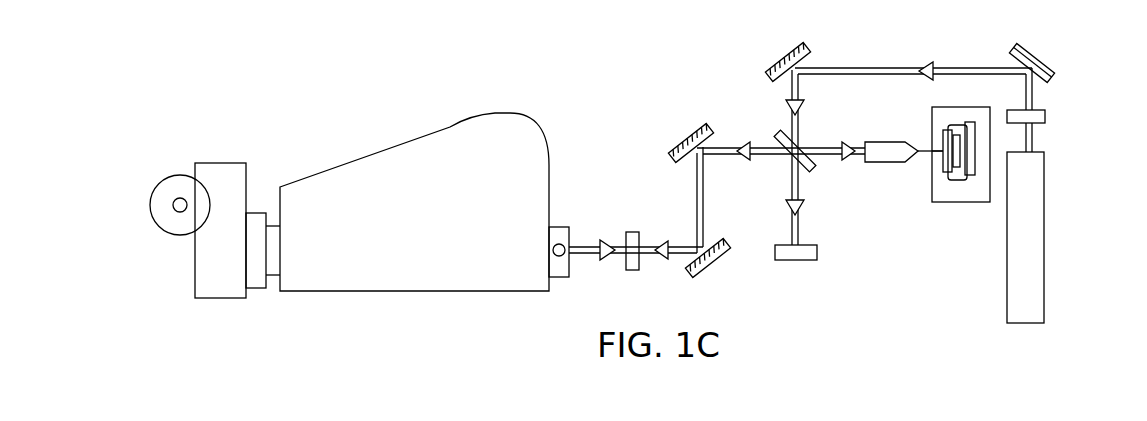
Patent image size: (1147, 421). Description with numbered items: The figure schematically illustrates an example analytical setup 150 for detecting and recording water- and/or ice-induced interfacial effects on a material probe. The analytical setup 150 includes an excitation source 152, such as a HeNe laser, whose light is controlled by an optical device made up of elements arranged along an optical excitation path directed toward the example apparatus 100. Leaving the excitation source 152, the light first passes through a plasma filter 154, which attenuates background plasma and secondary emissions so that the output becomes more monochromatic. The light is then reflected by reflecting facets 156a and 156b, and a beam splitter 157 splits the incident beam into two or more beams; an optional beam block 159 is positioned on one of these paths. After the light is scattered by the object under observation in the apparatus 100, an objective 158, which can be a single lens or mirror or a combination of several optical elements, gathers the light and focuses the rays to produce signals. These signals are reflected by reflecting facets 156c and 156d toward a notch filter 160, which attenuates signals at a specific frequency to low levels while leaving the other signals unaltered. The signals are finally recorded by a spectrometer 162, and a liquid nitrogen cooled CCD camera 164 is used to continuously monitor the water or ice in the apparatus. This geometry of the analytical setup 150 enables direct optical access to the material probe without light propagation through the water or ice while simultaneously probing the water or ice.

The analytical setup 150 is at (306, 105).
The excitation source 152 is at (1045, 240).
The plasma filter 154 is at (1048, 112).
The reflecting facet 156a is at (1045, 60).
The reflecting facet 156b is at (782, 55).
The reflecting facet 156c is at (688, 134).
The reflecting facet 156d is at (713, 268).
The beam splitter 157 is at (784, 133).
The objective 158 is at (882, 142).
The beam block 159 is at (797, 262).
The notch filter 160 is at (633, 232).
The spectrometer 162 is at (452, 124).
The liquid nitrogen cooled CCD camera 164 is at (218, 300).
The apparatus 100 is at (960, 204).